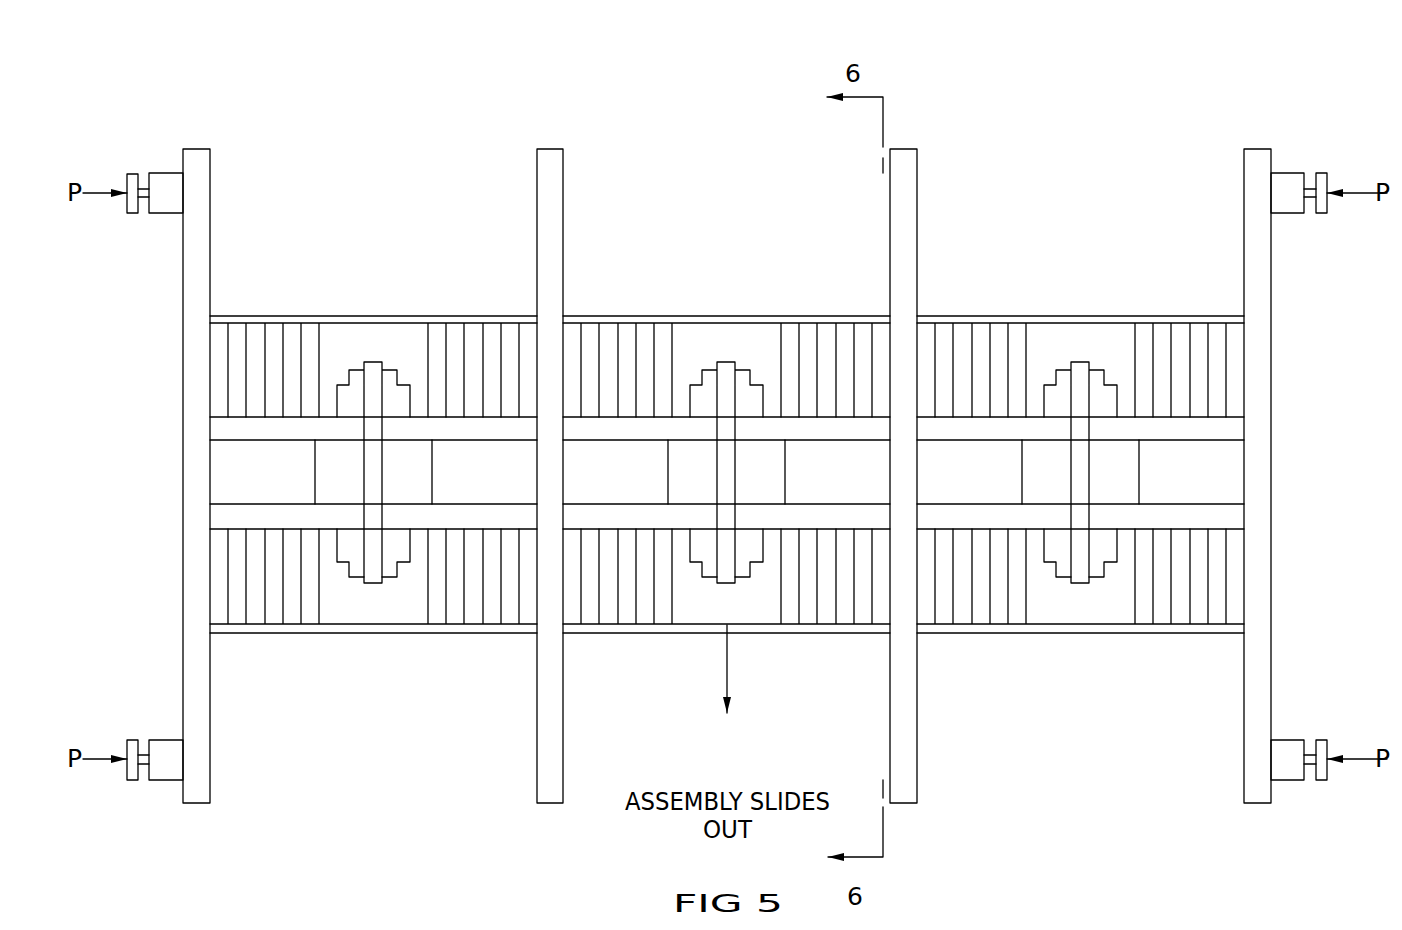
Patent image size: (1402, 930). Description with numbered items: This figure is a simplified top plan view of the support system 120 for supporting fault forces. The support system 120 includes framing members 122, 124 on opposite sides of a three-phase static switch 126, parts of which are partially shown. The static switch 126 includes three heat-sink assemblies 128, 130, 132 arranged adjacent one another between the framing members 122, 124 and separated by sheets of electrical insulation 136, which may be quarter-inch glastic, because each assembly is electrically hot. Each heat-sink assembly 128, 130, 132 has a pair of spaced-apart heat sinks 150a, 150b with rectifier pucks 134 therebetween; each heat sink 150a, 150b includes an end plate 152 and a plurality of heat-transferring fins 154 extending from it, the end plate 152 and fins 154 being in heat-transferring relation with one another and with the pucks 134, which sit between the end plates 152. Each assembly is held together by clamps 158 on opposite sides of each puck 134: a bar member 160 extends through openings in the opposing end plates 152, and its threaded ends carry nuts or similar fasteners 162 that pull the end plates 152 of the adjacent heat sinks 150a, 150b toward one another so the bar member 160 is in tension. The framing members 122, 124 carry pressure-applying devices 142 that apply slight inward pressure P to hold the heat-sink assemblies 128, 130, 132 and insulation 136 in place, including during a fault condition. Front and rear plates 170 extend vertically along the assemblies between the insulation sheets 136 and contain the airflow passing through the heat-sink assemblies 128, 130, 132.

The support system 120 is at (942, 138).
The framing member 122 is at (168, 182).
The framing member 124 is at (1287, 182).
The three-phase static switch 126 is at (1030, 160).
The heat-sink assembly 128 is at (352, 222).
The heat-sink assembly 130 is at (730, 222).
The heat-sink assembly 132 is at (1088, 230).
The rectifier puck 134 is at (425, 495).
The sheet of electrical insulation 136 is at (202, 790).
The pressure-applying device 142 is at (133, 180).
The heat sink 150a is at (410, 692).
The heat sink 150b is at (257, 331).
The end plate 152 is at (347, 430).
The heat-transferring fins 154 is at (453, 340).
The clamp 158 is at (395, 457).
The bar member 160 is at (370, 375).
The fastener 162 is at (387, 577).
The front and rear plate 170 is at (223, 320).